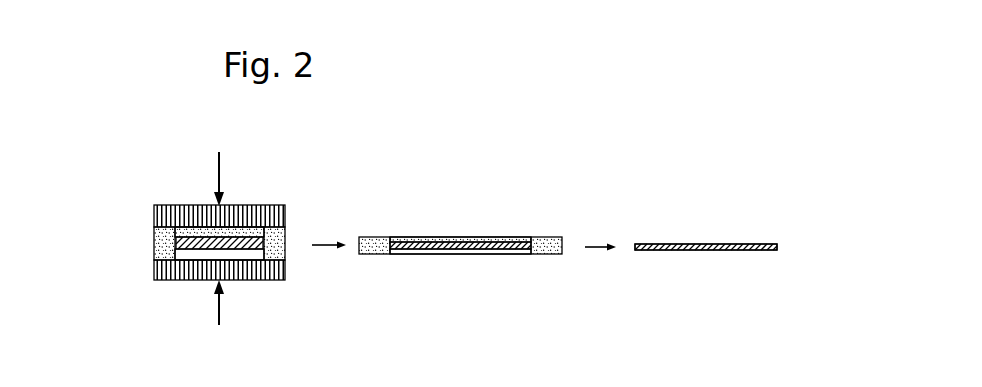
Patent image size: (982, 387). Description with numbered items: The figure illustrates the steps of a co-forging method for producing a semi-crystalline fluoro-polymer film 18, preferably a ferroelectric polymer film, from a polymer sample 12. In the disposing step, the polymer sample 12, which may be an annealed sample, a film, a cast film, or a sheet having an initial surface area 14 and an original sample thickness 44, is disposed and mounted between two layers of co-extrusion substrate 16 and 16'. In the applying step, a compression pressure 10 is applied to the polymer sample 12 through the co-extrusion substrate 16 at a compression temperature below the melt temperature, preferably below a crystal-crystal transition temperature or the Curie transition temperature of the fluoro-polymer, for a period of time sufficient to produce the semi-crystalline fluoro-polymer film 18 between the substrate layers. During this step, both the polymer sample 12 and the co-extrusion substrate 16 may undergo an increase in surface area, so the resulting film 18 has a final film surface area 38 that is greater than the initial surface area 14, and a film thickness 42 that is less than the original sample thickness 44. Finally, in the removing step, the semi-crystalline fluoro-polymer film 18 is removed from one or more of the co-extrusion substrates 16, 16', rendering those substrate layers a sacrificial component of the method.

The compression pressure 10 is at (219, 161).
The polymer sample 12 is at (265, 247).
The initial surface area 14 is at (197, 249).
The co-extrusion substrate 16 is at (353, 207).
The co-extrusion substrate 16' is at (353, 285).
The semi-crystalline fluoro-polymer film 18 is at (487, 242).
The final film surface area 38 is at (717, 244).
The film thickness 42 is at (764, 237).
The original sample thickness 44 is at (172, 236).